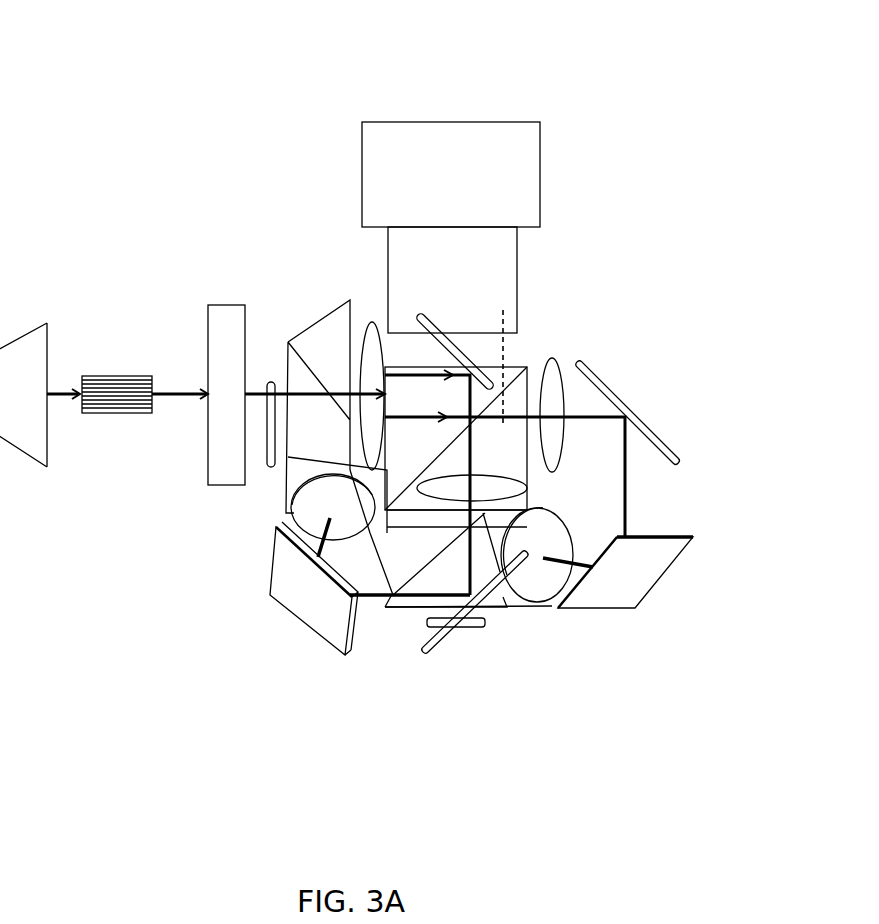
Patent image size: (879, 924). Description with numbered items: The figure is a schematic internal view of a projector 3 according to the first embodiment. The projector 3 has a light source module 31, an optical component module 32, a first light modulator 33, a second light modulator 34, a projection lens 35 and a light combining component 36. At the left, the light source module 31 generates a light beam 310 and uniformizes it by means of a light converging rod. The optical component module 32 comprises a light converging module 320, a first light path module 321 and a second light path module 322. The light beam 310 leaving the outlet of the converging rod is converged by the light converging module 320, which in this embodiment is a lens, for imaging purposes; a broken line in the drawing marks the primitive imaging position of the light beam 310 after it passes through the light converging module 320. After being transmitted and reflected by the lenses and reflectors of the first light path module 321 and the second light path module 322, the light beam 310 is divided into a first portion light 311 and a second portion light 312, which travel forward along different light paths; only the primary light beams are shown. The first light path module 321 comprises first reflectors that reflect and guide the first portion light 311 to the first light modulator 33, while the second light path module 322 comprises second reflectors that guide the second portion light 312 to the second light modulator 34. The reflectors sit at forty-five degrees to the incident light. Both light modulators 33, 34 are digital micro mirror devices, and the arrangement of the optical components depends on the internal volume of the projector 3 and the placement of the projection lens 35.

The projector 3 is at (93, 47).
The light source module 31 is at (226, 297).
The light beam 310 is at (272, 402).
The second light modulator 34 is at (271, 380).
The light converging module 320 is at (370, 322).
The projection lens 35 is at (475, 122).
The optical component module 32 is at (648, 339).
The second light path module 322 is at (470, 355).
The first light path module 321 is at (552, 358).
The second portion light 312 is at (427, 482).
The first portion light 311 is at (505, 474).
The light combining component 36 is at (530, 484).
The first light modulator 33 is at (478, 630).